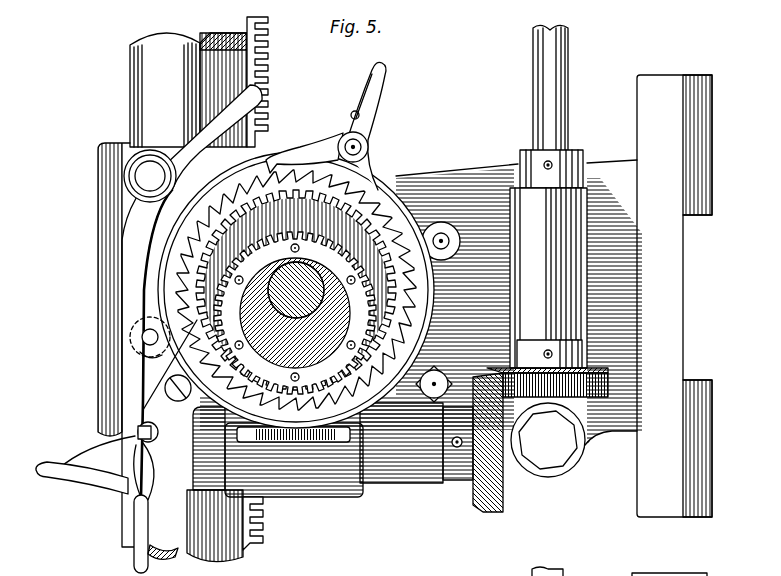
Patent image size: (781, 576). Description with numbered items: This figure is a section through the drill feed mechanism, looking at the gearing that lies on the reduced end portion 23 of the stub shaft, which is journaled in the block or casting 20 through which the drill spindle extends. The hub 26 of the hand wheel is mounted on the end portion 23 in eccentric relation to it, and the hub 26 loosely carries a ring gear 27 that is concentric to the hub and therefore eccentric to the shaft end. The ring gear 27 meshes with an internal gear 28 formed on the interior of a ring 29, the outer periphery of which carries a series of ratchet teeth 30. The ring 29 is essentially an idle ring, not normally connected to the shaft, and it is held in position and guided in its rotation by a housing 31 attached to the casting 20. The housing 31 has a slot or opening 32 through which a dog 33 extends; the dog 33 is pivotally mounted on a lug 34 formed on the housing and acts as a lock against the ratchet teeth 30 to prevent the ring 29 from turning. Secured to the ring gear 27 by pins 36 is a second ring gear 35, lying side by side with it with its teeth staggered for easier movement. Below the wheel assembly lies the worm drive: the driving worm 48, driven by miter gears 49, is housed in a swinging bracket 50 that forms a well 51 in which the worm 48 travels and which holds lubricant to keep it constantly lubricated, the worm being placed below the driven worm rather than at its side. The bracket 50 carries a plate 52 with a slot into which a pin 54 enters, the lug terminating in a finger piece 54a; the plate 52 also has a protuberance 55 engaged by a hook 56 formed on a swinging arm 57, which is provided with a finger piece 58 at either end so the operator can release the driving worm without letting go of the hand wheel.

The block or casting 20 is at (417, 325).
The reduced end portion of shaft 23 is at (312, 265).
The hub 26 is at (355, 388).
The ring gear 27 is at (338, 253).
The internal gear 28 is at (390, 405).
The ring 29 is at (404, 200).
The ratchet teeth 30 is at (362, 188).
The housing 31 is at (382, 205).
The slot or opening 32 is at (270, 160).
The dog 33 is at (333, 158).
The lug 34 is at (370, 167).
The ring gear 35 is at (345, 266).
The pins 36 is at (353, 282).
The driving worm 48 is at (318, 440).
The miter gears 49 is at (553, 432).
The swinging bracket 50 is at (410, 477).
The well 51 is at (297, 483).
The plate 52 is at (217, 526).
The pin 54 is at (178, 392).
The finger piece 54a is at (92, 487).
The protuberance 55 is at (137, 433).
The hook 56 is at (145, 473).
The swinging arm 57 is at (128, 230).
The finger piece 58 is at (262, 97).